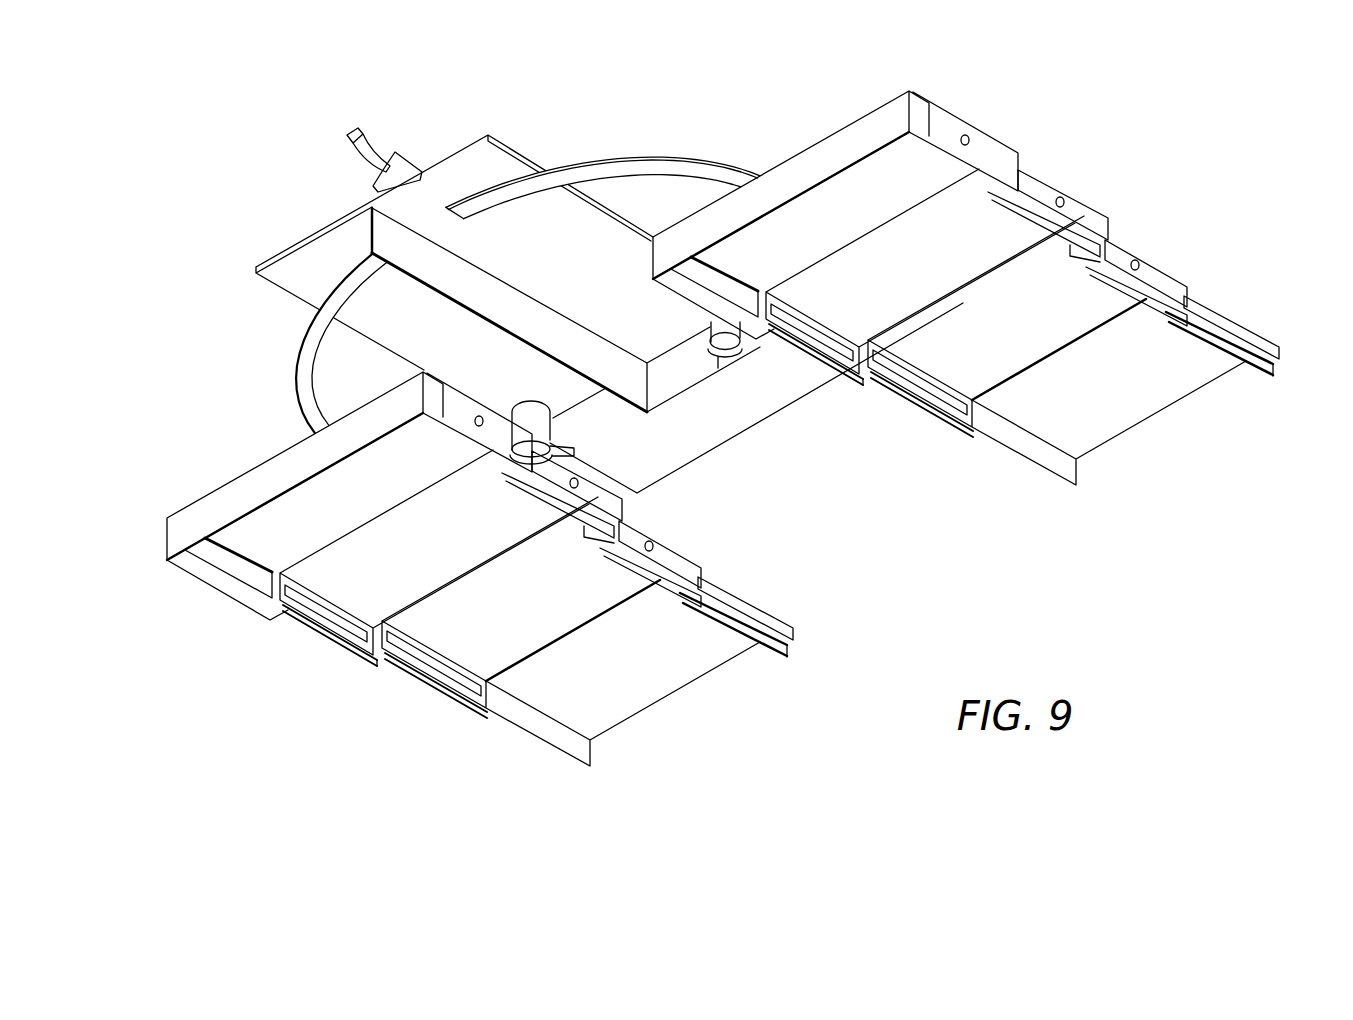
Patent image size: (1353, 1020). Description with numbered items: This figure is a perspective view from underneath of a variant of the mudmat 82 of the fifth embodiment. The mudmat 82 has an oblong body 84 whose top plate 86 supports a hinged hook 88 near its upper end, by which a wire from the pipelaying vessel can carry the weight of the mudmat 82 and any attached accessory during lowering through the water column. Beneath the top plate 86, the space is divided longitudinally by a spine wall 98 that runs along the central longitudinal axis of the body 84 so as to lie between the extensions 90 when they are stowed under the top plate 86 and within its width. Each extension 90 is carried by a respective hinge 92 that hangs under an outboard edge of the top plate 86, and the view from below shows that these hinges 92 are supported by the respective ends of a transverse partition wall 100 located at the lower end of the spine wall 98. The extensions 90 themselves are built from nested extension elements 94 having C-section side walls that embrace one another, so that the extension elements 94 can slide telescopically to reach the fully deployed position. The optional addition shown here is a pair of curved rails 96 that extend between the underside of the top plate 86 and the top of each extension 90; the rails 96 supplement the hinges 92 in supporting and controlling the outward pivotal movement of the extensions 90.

The mudmat 82 is at (1092, 99).
The oblong body 84 is at (313, 196).
The top plate 86 is at (297, 263).
The hinged hook 88 is at (406, 166).
The extension 90 is at (944, 112).
The hinge 92 is at (733, 351).
The extension element 94 is at (1087, 216).
The curved rail 96 is at (663, 176).
The spine wall 98 is at (522, 307).
The transverse partition wall 100 is at (677, 383).